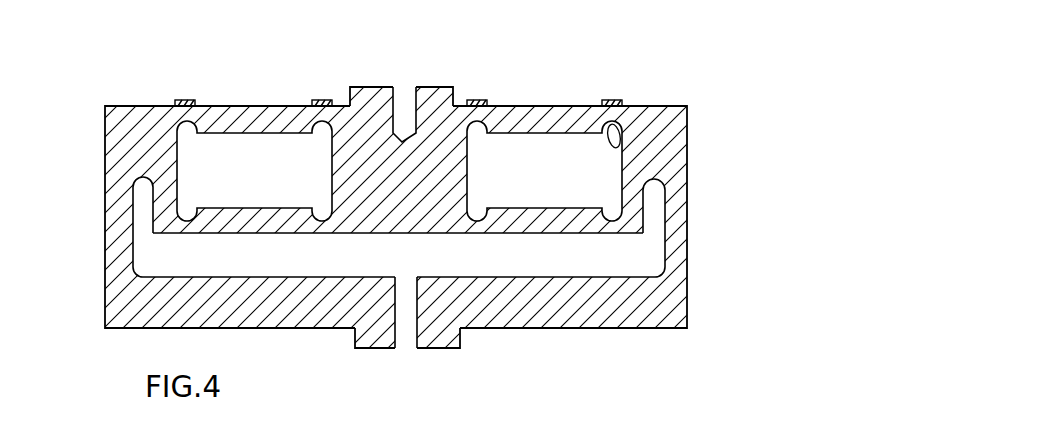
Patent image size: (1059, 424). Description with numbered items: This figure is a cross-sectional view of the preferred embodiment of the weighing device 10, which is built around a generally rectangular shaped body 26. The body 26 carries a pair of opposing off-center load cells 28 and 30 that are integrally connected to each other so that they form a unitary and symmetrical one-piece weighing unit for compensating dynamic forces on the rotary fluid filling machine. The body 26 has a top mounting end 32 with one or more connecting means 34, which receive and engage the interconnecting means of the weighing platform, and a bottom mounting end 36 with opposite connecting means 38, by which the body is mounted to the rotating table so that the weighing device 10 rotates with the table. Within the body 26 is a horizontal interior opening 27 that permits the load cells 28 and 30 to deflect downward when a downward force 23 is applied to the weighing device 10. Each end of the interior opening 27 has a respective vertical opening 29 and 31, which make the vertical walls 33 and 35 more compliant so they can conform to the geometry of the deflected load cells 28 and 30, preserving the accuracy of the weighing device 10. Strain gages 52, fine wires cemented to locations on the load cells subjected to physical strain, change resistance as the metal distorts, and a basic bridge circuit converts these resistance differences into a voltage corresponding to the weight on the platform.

The weighing device 10 is at (567, 52).
The downward force 23 is at (402, 44).
The rectangular shaped body 26 is at (672, 280).
The horizontal interior opening 27 is at (270, 262).
The off-center load cell 28 is at (180, 129).
The vertical opening 29 is at (140, 197).
The off-center load cell 30 is at (614, 128).
The vertical opening 31 is at (655, 203).
The top mounting end 32 is at (432, 88).
The vertical wall 33 is at (116, 137).
The connecting means 34 is at (394, 88).
The vertical wall 35 is at (678, 145).
The bottom mounting end 36 is at (435, 348).
The connecting means 38 is at (396, 338).
The strain gages 52 is at (184, 100).